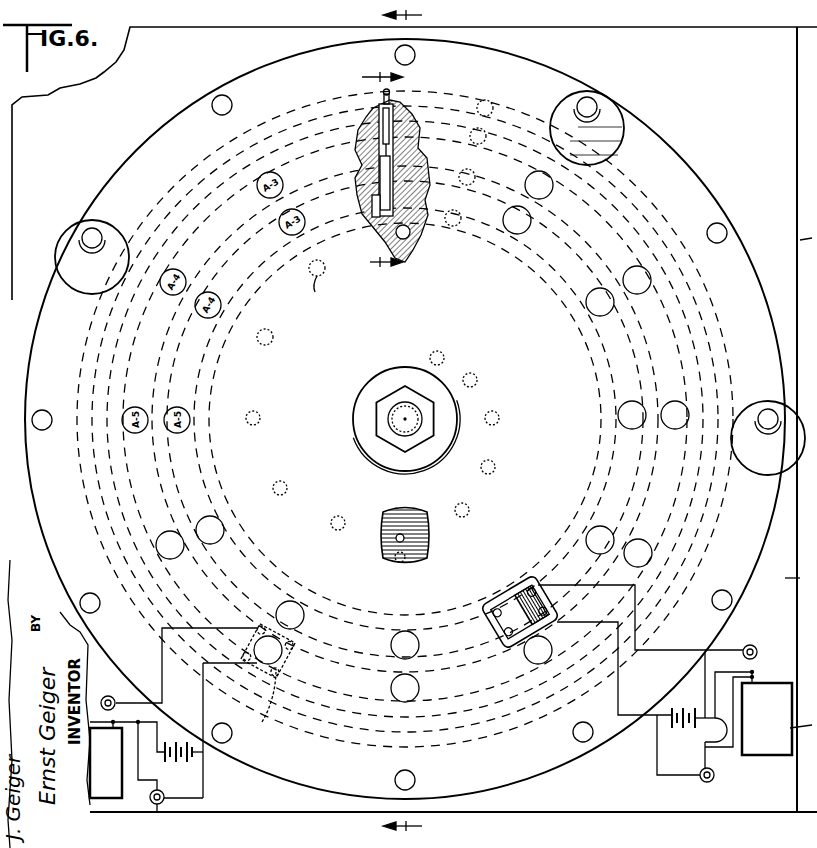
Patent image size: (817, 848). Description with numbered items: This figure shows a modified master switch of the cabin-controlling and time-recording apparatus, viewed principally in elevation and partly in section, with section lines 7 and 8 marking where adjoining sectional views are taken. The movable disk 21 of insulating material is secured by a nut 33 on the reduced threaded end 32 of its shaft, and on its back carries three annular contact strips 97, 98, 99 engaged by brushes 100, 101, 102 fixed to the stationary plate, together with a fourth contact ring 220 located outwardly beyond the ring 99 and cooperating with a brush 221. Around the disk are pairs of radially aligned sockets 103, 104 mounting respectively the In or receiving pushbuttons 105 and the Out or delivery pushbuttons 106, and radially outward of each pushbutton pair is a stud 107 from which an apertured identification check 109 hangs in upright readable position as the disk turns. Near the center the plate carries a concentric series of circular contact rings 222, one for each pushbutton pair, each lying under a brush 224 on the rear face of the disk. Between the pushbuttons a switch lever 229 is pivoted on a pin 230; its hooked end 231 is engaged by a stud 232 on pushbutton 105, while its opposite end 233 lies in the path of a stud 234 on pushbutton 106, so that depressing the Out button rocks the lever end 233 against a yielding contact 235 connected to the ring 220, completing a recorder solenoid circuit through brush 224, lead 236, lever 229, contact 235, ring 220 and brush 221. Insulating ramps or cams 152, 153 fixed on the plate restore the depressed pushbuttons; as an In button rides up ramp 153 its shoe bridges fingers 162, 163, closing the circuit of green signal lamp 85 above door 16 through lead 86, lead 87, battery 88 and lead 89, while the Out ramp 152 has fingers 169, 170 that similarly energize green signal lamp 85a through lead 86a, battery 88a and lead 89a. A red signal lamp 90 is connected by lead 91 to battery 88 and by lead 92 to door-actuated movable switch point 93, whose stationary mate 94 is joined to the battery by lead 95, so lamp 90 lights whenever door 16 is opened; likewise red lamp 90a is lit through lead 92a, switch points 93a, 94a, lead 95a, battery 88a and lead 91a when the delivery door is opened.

The movable disk 21 is at (710, 201).
The fourth contact ring 220 is at (221, 152).
The stud 107 is at (595, 104).
The apertured identification check 109 is at (624, 136).
The In pushbutton 105 is at (602, 316).
The Out pushbutton 106 is at (640, 294).
The brush 221 is at (497, 104).
The brush 102 is at (487, 137).
The socket 104 is at (474, 172).
The socket 103 is at (425, 172).
The brush 101 is at (461, 216).
The brush 100 is at (443, 236).
The lever end 233 is at (412, 140).
The yielding contact 235 is at (393, 122).
The stud 234 is at (373, 112).
The switch lever 229 is at (362, 170).
The pin 230 is at (360, 181).
The hooked end 231 is at (360, 208).
The stud 232 is at (420, 226).
The lead 236 is at (376, 233).
The brush 224 is at (278, 330).
The section line 7 is at (382, 170).
The section line 8 is at (411, 421).
The annular contact strip 99 is at (196, 205).
The annular contact strip 98 is at (240, 231).
The annular contact strip 97 is at (259, 273).
The nut 33 is at (378, 398).
The reduced threaded end 32 is at (392, 419).
The circular contact rings 222 is at (390, 514).
The out ramp or cam 152 is at (512, 602).
The finger 169 is at (516, 585).
The finger 170 is at (522, 640).
The finger 163 is at (297, 626).
The ramp or cam 153 is at (288, 656).
The finger 162 is at (233, 733).
The lead 86 is at (164, 648).
The green signal light 85 is at (110, 696).
The lead 87 is at (157, 715).
The lead 89 is at (203, 708).
The lead 95 is at (157, 735).
The stationary switch point 94 is at (105, 743).
The door-actuated movable switch point 93 is at (90, 804).
The battery 88 is at (188, 762).
The lead 92 is at (140, 772).
The lead 91 is at (203, 792).
The red signal lamp 90 is at (157, 812).
The door 16 is at (90, 806).
The lead 86a is at (652, 613).
The green signal lamp 85a is at (751, 645).
The lead 89a is at (618, 697).
The battery 88a is at (694, 710).
The lead 91a is at (657, 757).
The red signal lamp 90a is at (710, 782).
The lead 95a is at (712, 735).
The switch point 94a is at (752, 671).
The switch point 93a is at (751, 684).
The lead 92a is at (724, 753).